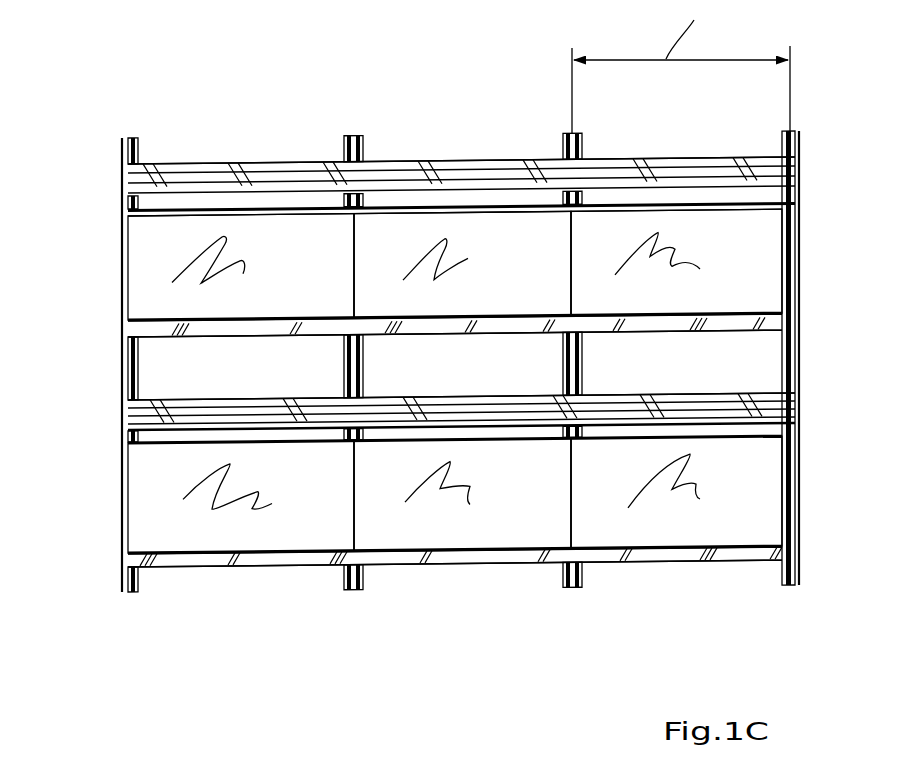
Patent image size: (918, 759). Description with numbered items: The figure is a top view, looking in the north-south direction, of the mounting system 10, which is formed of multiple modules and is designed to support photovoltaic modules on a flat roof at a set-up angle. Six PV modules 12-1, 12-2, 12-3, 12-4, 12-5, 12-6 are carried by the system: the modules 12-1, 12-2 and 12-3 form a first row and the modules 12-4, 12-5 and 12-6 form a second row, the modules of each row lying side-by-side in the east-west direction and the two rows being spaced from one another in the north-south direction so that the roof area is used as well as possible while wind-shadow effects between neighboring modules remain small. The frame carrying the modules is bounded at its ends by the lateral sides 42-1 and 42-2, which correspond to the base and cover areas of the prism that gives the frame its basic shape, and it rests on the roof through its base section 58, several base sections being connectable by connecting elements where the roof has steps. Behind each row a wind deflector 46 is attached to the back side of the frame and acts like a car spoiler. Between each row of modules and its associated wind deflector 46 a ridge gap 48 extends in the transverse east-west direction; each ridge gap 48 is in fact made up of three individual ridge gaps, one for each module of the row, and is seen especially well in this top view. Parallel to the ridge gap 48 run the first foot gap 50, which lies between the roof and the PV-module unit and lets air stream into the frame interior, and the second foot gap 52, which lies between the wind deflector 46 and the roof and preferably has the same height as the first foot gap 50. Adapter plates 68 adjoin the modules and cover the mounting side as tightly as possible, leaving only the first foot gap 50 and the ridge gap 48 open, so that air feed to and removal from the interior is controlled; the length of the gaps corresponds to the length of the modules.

The mounting system 10 is at (242, 136).
The PV module 12-1 is at (333, 244).
The PV module 12-2 is at (561, 237).
The PV module 12-3 is at (782, 235).
The PV module 12-4 is at (335, 476).
The PV module 12-5 is at (561, 471).
The PV module 12-6 is at (782, 468).
The lateral side 42-1 is at (810, 256).
The lateral side 42-2 is at (117, 262).
The wind deflector 46 is at (463, 163).
The ridge gap 48 is at (150, 204).
The first foot gap 50 is at (430, 340).
The second foot gap 52 is at (604, 138).
The base section 58 is at (346, 363).
The adapter plate 68 is at (613, 333).